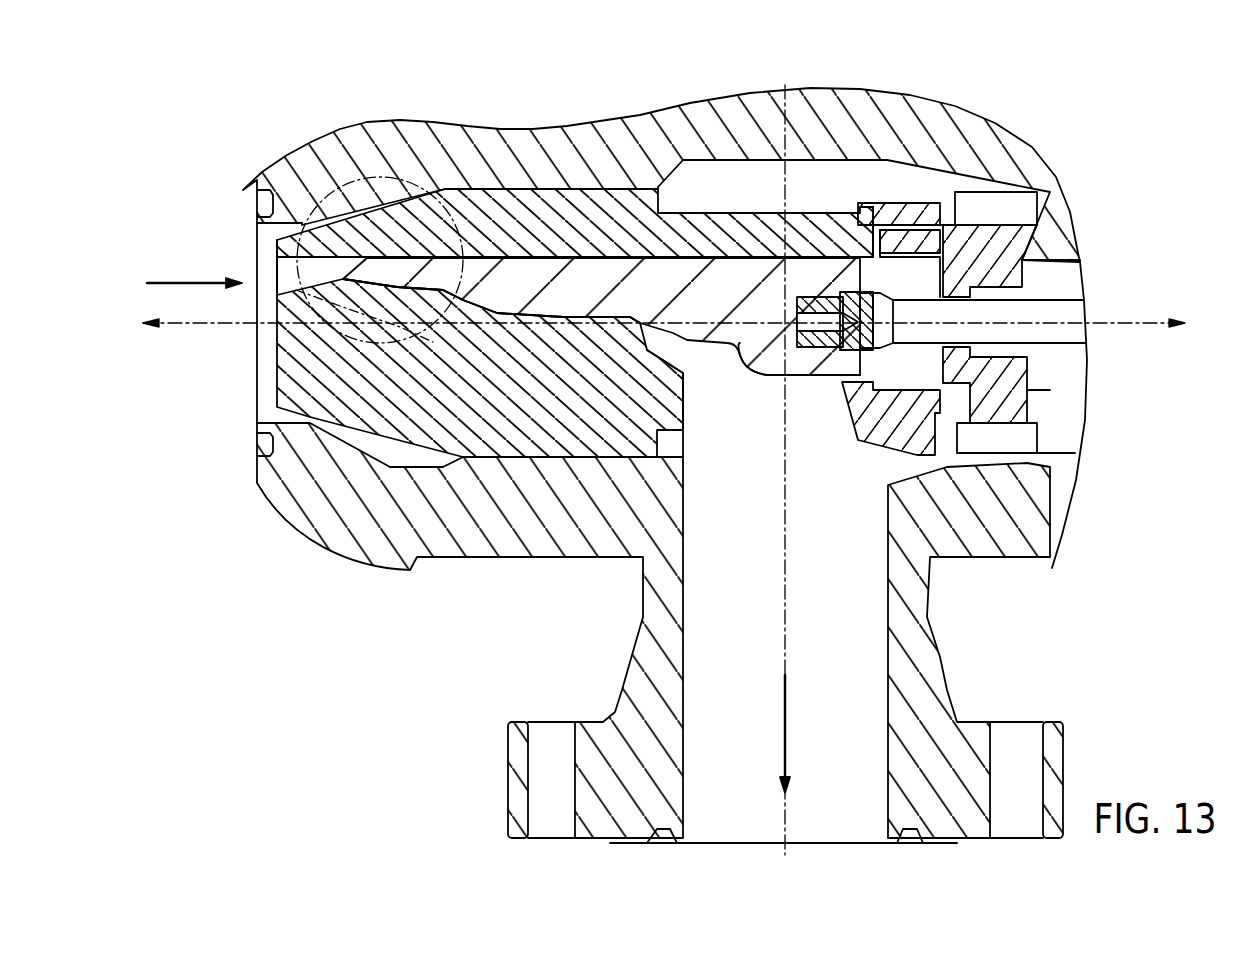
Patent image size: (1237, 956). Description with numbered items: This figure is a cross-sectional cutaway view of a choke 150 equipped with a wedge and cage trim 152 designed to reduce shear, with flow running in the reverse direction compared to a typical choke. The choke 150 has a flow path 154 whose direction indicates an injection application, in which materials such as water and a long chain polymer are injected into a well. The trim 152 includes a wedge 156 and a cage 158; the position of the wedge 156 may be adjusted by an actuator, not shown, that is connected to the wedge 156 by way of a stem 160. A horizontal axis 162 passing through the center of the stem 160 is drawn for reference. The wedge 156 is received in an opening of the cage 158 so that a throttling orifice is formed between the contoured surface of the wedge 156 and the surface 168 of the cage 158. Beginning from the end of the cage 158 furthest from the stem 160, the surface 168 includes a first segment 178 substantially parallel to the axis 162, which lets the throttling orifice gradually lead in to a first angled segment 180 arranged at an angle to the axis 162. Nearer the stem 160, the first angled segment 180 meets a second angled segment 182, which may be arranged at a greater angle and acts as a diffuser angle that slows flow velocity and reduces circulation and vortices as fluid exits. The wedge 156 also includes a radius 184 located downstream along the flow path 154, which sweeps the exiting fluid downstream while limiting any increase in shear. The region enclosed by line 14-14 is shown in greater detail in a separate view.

The line 14- 14 is at (303, 217).
The choke 150 is at (862, 60).
The wedge and cage trim 152 is at (275, 92).
The flow path 154 is at (188, 282).
The wedge 156 is at (652, 303).
The cage 158 is at (445, 189).
The stem 160 is at (1060, 313).
The horizontal axis 162 is at (205, 326).
The surface of the cage 168 is at (286, 273).
The first segment 178 is at (350, 299).
The first angled segment 180 is at (448, 318).
The second angled segment 182 is at (651, 360).
The radius 184 is at (760, 357).